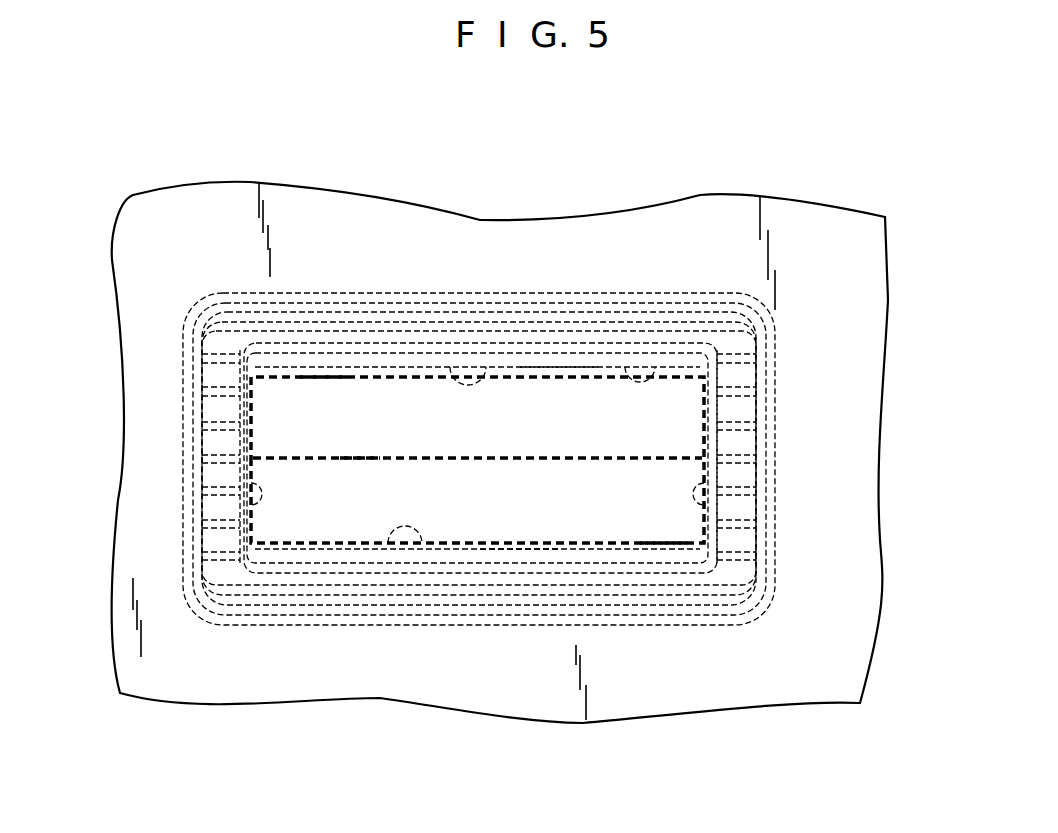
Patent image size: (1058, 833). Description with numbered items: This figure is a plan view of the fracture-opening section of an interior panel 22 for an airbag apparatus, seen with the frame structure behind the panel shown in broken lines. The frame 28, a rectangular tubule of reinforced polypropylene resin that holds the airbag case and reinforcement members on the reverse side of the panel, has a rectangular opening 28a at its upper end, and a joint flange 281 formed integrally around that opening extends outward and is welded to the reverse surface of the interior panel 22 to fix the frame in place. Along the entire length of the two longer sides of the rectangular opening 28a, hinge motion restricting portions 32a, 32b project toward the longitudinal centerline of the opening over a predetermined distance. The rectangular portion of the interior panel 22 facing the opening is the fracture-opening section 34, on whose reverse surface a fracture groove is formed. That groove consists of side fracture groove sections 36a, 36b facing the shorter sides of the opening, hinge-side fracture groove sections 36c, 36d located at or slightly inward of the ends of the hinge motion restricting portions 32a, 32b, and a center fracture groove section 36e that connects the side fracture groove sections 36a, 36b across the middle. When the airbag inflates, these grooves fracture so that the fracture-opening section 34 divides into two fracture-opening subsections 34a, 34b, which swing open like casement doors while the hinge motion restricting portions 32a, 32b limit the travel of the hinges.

The interior panel 22 is at (860, 408).
The frame 28 is at (355, 580).
The joint flange 281 is at (625, 618).
The rectangular opening 28a is at (490, 368).
The hinge motion restricting portion 32a is at (552, 370).
The hinge motion restricting portion 32b is at (518, 547).
The fracture-opening section 34 is at (407, 428).
The fracture-opening subsection 34a is at (325, 397).
The fracture-opening subsection 34b is at (663, 522).
The side fracture groove section 36a is at (247, 508).
The side fracture groove section 36b is at (708, 507).
The hinge-side fracture groove section 36c is at (623, 375).
The hinge-side fracture groove section 36d is at (422, 540).
The center fracture groove section 36e is at (358, 458).